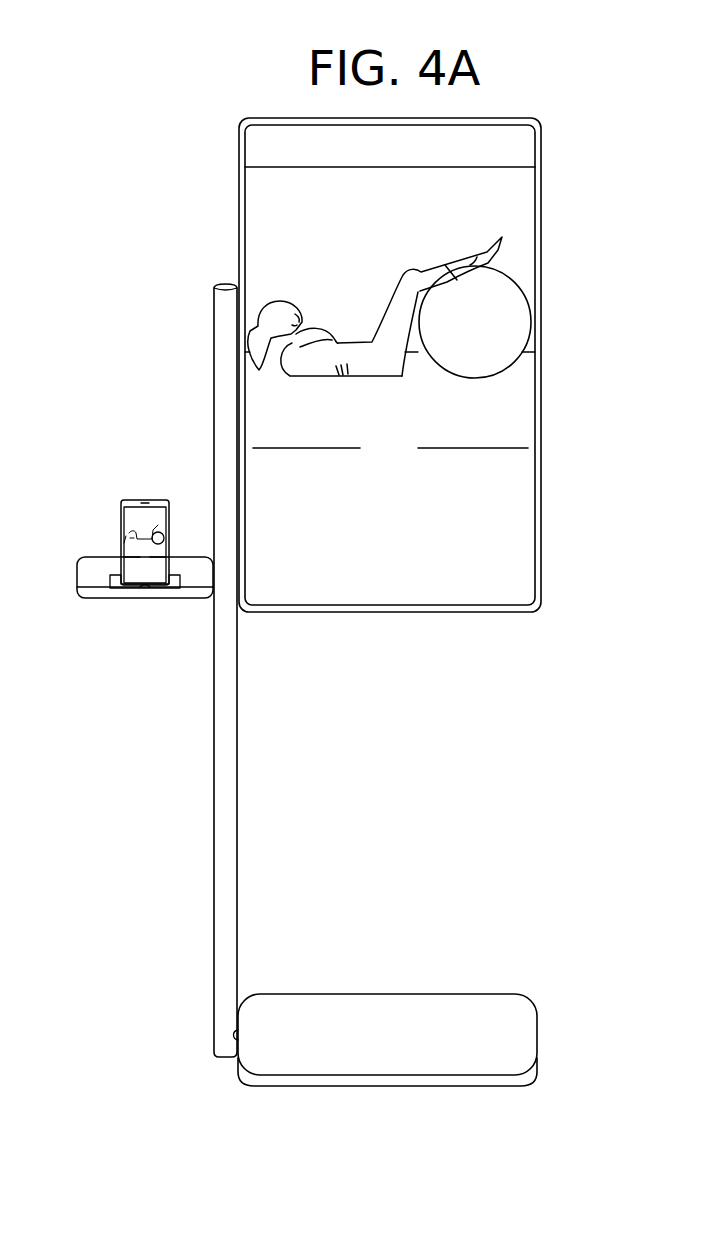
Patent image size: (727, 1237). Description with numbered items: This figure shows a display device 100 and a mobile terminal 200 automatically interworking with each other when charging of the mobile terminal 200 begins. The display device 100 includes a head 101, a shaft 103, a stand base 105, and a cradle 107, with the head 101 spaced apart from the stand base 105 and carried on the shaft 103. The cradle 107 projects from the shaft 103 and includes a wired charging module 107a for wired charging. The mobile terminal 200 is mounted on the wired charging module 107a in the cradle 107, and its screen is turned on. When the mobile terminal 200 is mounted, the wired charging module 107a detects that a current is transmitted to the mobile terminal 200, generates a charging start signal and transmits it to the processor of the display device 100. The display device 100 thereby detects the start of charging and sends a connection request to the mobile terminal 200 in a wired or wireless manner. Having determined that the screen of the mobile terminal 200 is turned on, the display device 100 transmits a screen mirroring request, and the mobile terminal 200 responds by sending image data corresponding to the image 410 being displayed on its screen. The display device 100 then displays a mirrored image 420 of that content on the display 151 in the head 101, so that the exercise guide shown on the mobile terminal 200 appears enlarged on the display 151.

The display device 100 is at (84, 251).
The head 101 is at (541, 187).
The display 151 is at (535, 275).
The mirrored image 420 is at (517, 402).
The shaft 103 is at (218, 773).
The stand base 105 is at (528, 1027).
The cradle 107 is at (175, 596).
The wired charging module 107a is at (112, 600).
The mobile terminal 200 is at (127, 537).
The image 410 is at (145, 512).